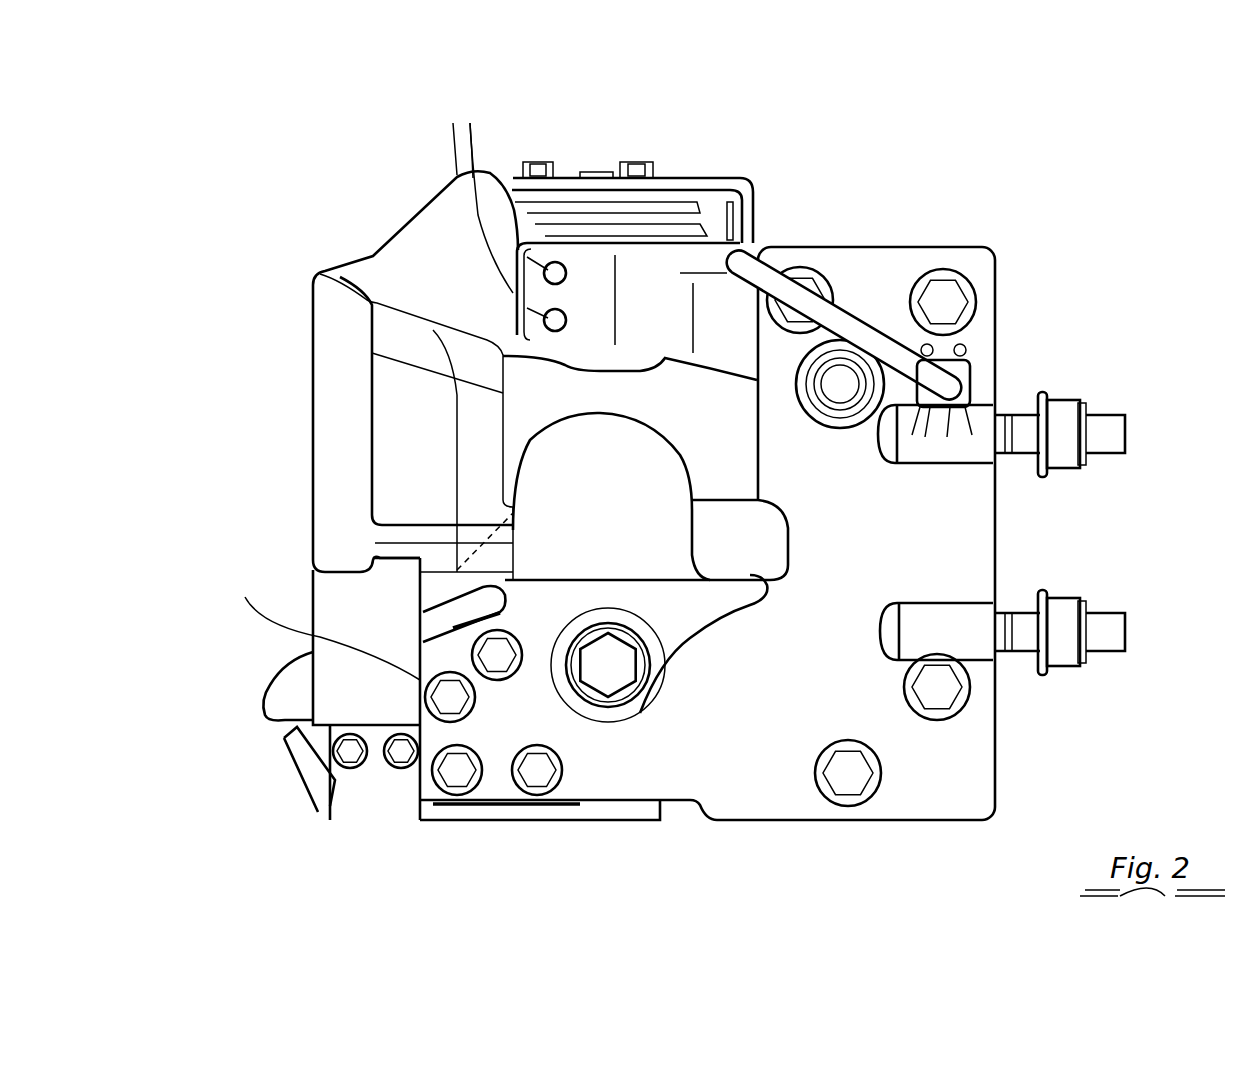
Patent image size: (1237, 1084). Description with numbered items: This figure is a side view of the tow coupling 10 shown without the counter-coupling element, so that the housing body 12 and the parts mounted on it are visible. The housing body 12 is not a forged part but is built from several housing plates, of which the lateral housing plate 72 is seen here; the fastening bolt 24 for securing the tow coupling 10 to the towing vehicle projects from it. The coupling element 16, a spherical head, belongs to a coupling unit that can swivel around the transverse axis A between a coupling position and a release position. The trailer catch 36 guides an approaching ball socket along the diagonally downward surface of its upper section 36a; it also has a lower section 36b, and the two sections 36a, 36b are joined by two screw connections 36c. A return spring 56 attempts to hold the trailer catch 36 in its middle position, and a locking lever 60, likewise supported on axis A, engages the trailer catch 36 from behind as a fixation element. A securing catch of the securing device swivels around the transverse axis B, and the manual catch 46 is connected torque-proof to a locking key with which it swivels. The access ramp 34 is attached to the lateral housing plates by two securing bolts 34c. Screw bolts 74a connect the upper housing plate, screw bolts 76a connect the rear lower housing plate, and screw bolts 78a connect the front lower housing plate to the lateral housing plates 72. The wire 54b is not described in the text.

The tow coupling 10 is at (1174, 172).
The housing body 12 is at (960, 793).
The coupling element 16 is at (618, 513).
The fastening bolt 24 is at (1027, 638).
The access ramp 34 is at (283, 698).
The securing bolts 34c is at (480, 652).
The trailer catch 36 is at (397, 263).
The upper section of trailer catch 36a is at (333, 337).
The lower section of trailer catch 36b is at (313, 773).
The screw connections 36c is at (400, 768).
The manual catch 46 is at (840, 320).
The wires 54b is at (467, 130).
The return spring 56 is at (660, 213).
The locking levers 60 is at (727, 603).
The lateral housing plate 72 is at (967, 540).
The screw bolts 74a is at (943, 302).
The screw bolts 76a is at (450, 777).
The screw bolts 78a is at (935, 690).
The axis A is at (608, 665).
The axis B is at (843, 385).